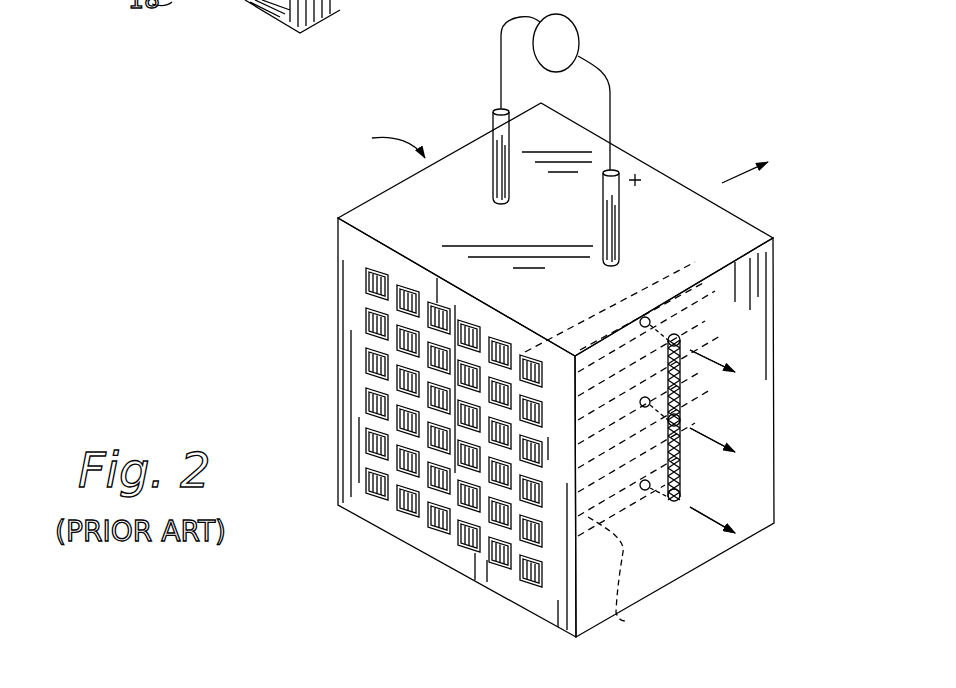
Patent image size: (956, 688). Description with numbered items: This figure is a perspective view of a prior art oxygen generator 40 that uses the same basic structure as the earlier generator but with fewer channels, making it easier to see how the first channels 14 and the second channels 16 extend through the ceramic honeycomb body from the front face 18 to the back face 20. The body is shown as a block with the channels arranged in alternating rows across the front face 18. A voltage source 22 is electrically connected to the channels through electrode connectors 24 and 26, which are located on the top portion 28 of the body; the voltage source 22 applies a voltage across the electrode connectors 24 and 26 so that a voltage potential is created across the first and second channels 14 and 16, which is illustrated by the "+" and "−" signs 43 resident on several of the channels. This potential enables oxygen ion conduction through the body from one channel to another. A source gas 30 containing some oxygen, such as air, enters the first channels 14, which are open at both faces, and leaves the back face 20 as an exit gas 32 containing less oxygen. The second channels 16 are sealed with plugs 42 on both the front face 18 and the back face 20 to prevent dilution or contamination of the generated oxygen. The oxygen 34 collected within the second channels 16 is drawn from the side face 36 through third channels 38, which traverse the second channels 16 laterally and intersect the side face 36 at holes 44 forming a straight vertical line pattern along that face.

The first plurality of channels 14 is at (627, 620).
The second plurality of channels 16 is at (608, 315).
The front face 18 is at (510, 583).
The back face 20 is at (778, 336).
The voltage source 22 is at (571, 22).
The electrode connector 24 is at (619, 232).
The electrode connector 26 is at (498, 169).
The top portion 28 is at (718, 235).
The source gas 30 is at (314, 403).
The exit gas 32 is at (766, 160).
The oxygen 34 is at (748, 438).
The side face 36 is at (643, 557).
The third channels 38 is at (650, 333).
The oxygen generator 40 is at (383, 141).
The plugs 42 is at (372, 283).
The "+" and "−" signs 43 is at (392, 508).
The holes 44 is at (684, 337).